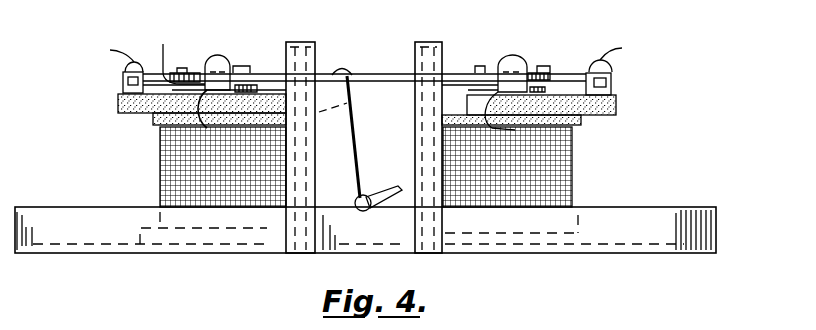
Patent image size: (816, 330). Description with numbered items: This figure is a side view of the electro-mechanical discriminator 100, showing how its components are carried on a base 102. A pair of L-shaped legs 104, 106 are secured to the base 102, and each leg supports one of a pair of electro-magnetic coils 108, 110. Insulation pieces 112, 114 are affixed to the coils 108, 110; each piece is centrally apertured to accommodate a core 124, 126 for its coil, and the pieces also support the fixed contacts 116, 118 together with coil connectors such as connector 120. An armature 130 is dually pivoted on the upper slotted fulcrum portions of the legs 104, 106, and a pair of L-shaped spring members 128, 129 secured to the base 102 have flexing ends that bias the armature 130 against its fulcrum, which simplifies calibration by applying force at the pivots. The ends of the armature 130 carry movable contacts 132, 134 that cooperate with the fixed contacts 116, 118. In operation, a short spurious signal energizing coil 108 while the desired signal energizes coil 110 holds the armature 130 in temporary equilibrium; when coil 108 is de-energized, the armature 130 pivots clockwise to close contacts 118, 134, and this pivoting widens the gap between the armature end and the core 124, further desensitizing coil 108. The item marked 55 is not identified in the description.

The electro-mechanical discriminator 100 is at (492, 263).
The base 102 is at (674, 208).
The L-shaped leg 104 is at (362, 97).
The L-shaped leg 106 is at (414, 129).
The electro-magnetic coil 108 is at (160, 153).
The electro-magnetic coil 110 is at (576, 152).
The insulation piece 112 is at (118, 100).
The insulation piece 114 is at (616, 107).
The fixed contact 116 is at (123, 82).
The fixed contact 118 is at (614, 82).
The coil connector 120 is at (228, 57).
The core 124 is at (177, 53).
The core 126 is at (527, 83).
The L-shaped spring member 128 is at (312, 158).
The L-shaped spring member 129 is at (414, 162).
The armature 130 is at (352, 77).
The movable contact 132 is at (123, 67).
The movable contact 134 is at (618, 68).
The pivot ring 55 is at (395, 212).